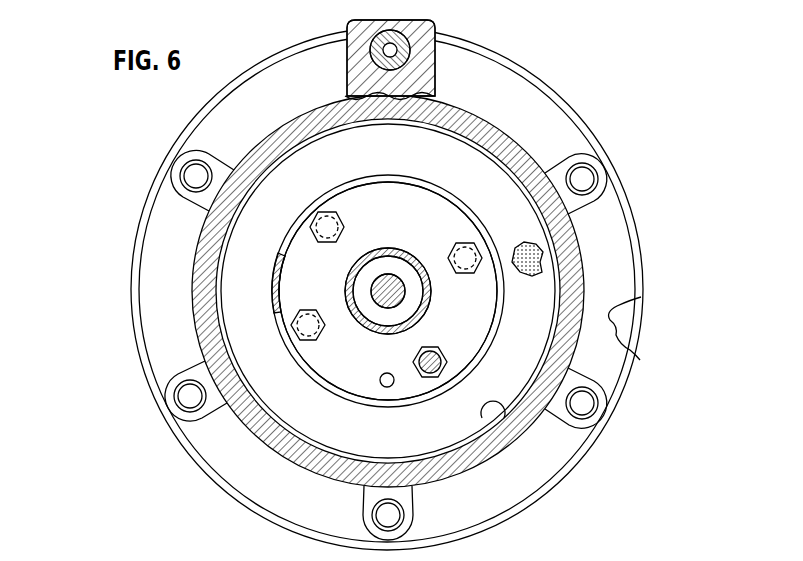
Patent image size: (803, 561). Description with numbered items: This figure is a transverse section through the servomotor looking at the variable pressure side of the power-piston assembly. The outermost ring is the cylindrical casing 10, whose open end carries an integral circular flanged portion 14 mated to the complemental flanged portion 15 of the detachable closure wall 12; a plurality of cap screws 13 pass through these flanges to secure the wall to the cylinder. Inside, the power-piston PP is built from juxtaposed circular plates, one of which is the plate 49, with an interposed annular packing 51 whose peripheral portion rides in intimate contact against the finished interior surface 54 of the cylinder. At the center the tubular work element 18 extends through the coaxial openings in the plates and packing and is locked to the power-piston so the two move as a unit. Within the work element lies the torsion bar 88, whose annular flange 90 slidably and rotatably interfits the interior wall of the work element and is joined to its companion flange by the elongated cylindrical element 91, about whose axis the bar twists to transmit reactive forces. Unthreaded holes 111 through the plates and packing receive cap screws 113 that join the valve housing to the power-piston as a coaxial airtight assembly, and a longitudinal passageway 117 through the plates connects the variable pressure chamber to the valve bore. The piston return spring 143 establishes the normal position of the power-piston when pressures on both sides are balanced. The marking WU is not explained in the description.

The cylindrical casing 10 is at (570, 219).
The detachable member or wall 12 is at (127, 343).
The cap screws 13 is at (412, 512).
The circular flanged portion 14 is at (612, 358).
The circular flanged portion 15 is at (633, 322).
The work element 18 is at (347, 278).
The circular plate 49 is at (468, 162).
The annular packing 51 is at (540, 256).
The finished interior surface 54 is at (500, 441).
The torsion bar 88 is at (376, 307).
The annular flange 90 is at (407, 302).
The elongated cylindrical element 91 is at (393, 277).
The unthreaded holes 111 is at (446, 364).
The cap screws 113 is at (476, 253).
The longitudinal passageway 117 is at (381, 385).
The piston return spring 143 is at (305, 353).
The power-piston PP is at (455, 437).
The wear marking WU is at (418, 250).